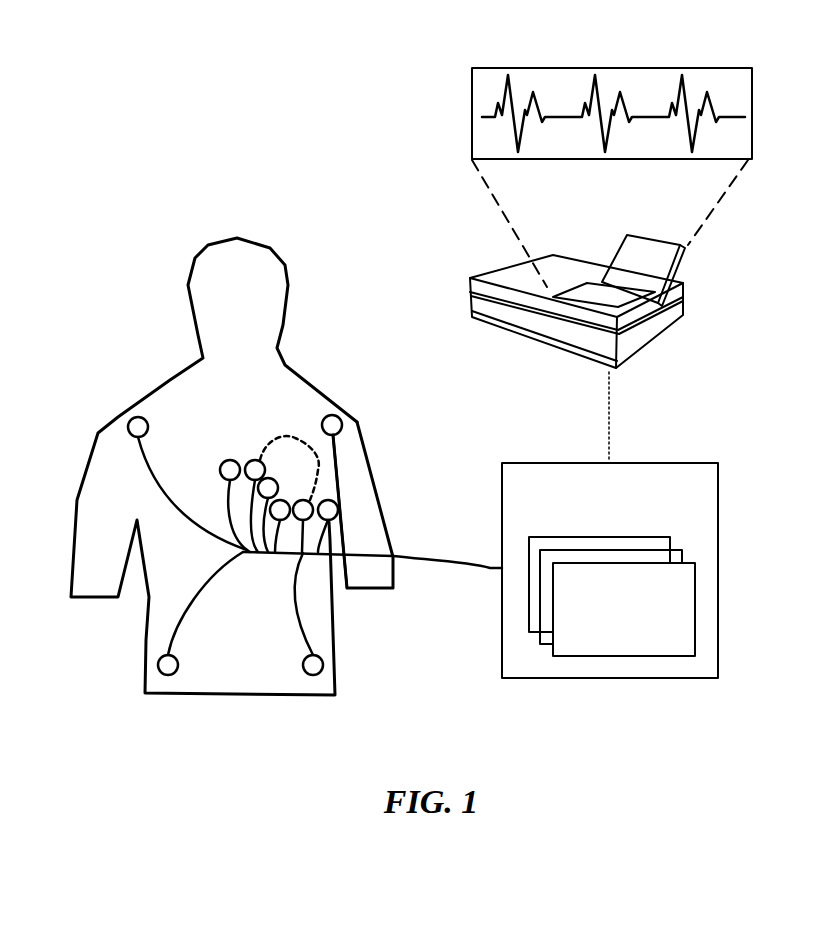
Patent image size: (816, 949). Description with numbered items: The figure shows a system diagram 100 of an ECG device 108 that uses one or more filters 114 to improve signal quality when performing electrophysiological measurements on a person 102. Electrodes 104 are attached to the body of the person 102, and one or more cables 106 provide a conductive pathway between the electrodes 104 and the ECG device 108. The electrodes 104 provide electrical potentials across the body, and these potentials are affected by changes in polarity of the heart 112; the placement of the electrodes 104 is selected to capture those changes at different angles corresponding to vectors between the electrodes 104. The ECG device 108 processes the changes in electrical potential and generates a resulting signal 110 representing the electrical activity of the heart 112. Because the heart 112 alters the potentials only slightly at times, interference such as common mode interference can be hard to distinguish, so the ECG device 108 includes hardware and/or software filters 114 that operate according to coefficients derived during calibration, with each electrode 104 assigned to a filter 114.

The system diagram 100 is at (156, 132).
The person 102 is at (163, 383).
The electrodes 104 is at (127, 420).
The cables 106 is at (173, 507).
The ECG device 108 is at (468, 278).
The resulting signal 110 is at (633, 67).
The heart 112 is at (333, 458).
The filters 114 is at (612, 596).